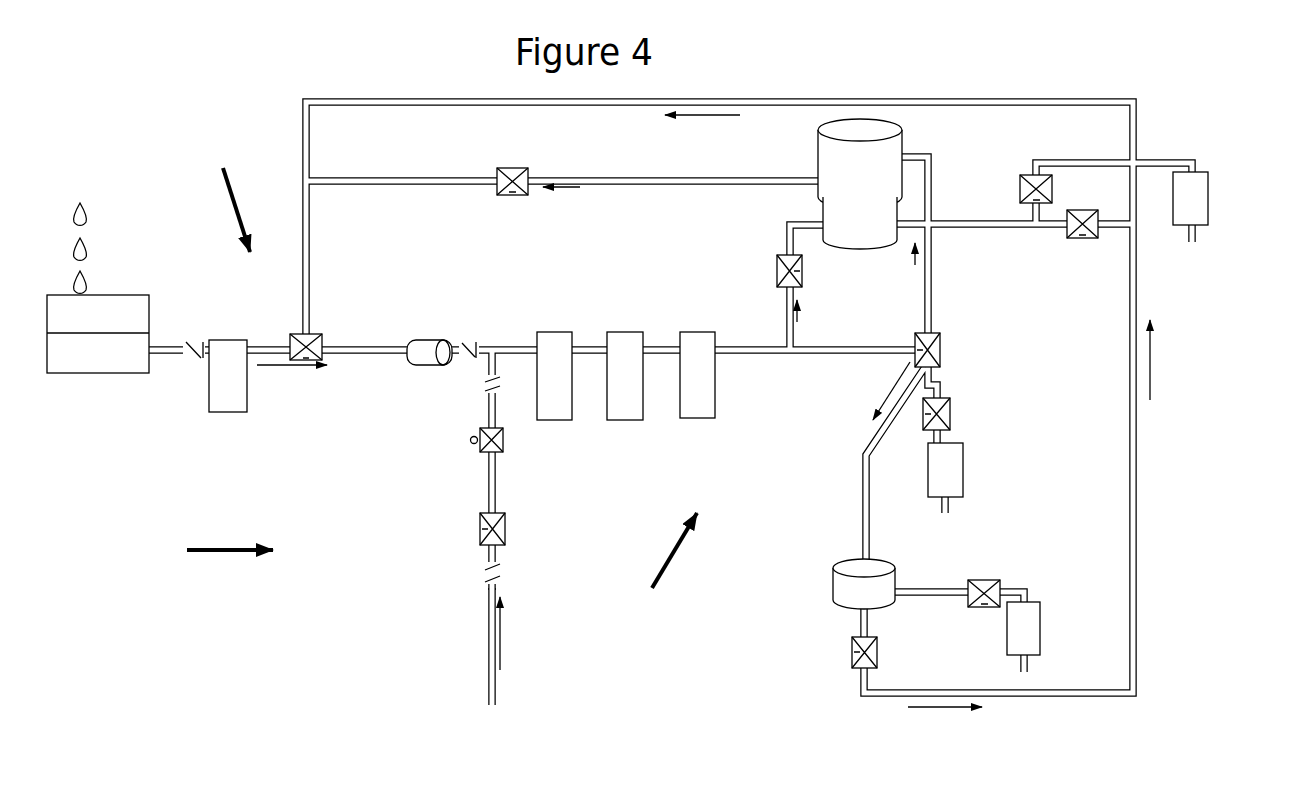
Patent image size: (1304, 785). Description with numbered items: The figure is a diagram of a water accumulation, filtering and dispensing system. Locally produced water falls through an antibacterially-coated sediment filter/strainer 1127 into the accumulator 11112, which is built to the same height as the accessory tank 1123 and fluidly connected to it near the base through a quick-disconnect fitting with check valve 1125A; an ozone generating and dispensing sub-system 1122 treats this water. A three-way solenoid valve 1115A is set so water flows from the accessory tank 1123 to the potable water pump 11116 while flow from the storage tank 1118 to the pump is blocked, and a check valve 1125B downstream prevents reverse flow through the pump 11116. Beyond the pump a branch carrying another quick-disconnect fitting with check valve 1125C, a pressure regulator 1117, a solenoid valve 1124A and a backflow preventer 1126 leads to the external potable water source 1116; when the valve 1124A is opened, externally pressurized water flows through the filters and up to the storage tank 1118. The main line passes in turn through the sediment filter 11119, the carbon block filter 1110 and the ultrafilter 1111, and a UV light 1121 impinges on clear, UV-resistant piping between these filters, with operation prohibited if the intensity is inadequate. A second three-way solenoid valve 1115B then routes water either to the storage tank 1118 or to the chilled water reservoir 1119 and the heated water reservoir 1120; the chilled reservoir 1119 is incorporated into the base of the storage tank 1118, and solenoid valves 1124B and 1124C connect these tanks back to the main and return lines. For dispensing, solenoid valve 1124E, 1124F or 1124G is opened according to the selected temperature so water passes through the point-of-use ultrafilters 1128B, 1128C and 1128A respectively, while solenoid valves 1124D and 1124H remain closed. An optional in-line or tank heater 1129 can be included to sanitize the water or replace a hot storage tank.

The accumulator tank 11112 is at (132, 376).
The sediment filter/strainer 1127 is at (93, 293).
The ozone generating and dispensing sub-system 1122 is at (235, 215).
The quick-disconnect fitting with check valve 1125A is at (197, 338).
The accessory tank 1123 is at (207, 410).
The three-way solenoid valve 1115A is at (432, 303).
The potable water pump 11116 is at (418, 367).
The quick-disconnect fitting with check valve 1125B is at (471, 362).
The quick-disconnect fitting with check valve 1125C is at (487, 392).
The pressure regulator 1117 is at (482, 450).
The solenoid valve 1124A is at (473, 537).
The backflow preventer 1126 is at (483, 585).
The external potable water source 1116 is at (489, 663).
The sediment filter 11119 is at (550, 327).
The carbon block filter 1110 is at (632, 332).
The ultrafilter 1111 is at (693, 347).
The solenoid valve 1124C is at (773, 257).
The storage tank 1118 is at (905, 157).
The chilled water reservoir 1119 is at (822, 215).
The solenoid valve 1124B is at (527, 166).
The three-way solenoid valve 1115B is at (915, 333).
The solenoid valve 1124G is at (1125, 142).
The solenoid valve 1124H is at (1083, 238).
The point-of-use ultrafilter 1128A is at (1205, 172).
The solenoid valve 1124F is at (1050, 373).
The point-of-use ultrafilter 1128C is at (965, 463).
The heated water reservoir 1120 is at (848, 558).
The solenoid valve 1124E is at (997, 578).
The point-of-use ultrafilter 1128B is at (1150, 585).
The solenoid valve 1124D is at (850, 653).
The in-line or tank heater 1129 is at (663, 552).
The UV light 1121 is at (218, 545).